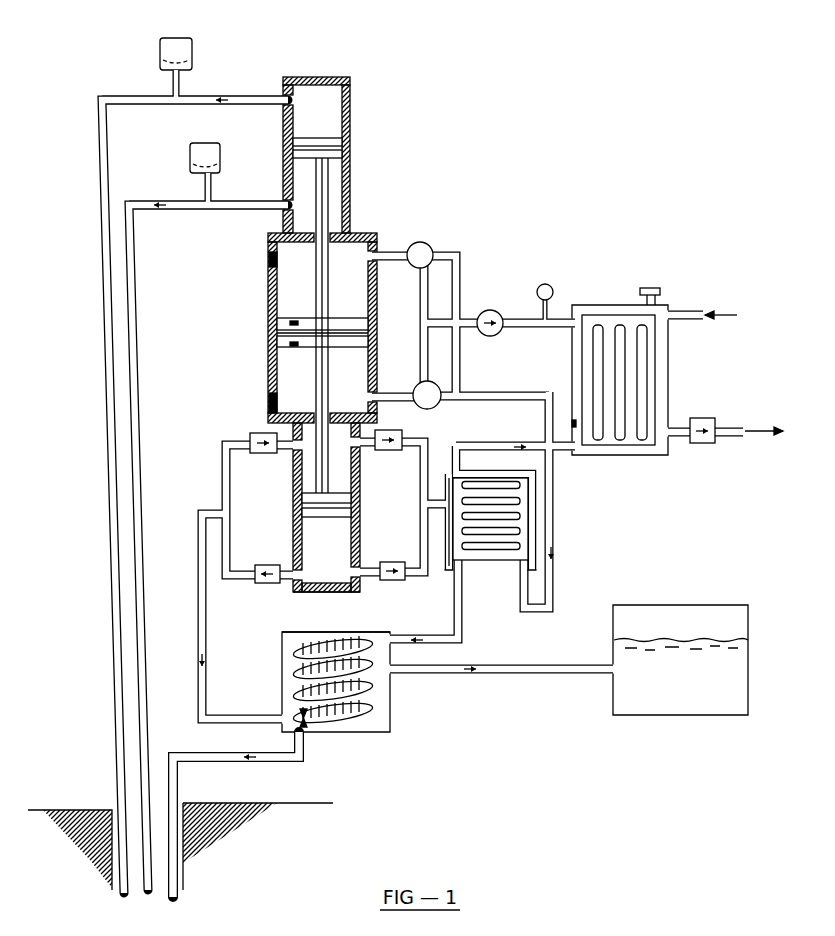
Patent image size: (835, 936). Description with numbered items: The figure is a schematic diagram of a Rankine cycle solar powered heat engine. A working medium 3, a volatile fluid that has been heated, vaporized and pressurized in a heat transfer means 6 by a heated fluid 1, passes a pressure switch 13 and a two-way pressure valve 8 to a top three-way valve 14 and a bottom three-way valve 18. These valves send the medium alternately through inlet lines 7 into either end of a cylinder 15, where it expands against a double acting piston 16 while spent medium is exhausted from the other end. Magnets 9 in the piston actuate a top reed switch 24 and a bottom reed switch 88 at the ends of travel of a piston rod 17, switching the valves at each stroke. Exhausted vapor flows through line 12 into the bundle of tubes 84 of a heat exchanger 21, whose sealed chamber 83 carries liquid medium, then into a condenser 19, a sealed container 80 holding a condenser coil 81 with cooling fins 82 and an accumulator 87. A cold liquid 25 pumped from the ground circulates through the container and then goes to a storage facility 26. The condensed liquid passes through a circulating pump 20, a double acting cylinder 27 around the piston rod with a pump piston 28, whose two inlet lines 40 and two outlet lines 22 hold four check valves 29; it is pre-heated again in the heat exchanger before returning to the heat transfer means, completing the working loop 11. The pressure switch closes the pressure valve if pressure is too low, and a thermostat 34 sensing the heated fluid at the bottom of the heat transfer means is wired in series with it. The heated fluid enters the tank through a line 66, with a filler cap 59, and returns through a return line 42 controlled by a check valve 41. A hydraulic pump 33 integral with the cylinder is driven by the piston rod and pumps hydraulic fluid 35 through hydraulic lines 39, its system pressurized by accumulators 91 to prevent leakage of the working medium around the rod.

The heated fluid 1 is at (787, 477).
The working medium 3 is at (199, 660).
The heat transfer means 6 is at (603, 315).
The inlet lines 7 is at (393, 257).
The two-way pressure valve 8 is at (493, 311).
The magnet 9 is at (295, 320).
The working loop 11 is at (541, 422).
The line 12 is at (488, 393).
The pressure switch 13 is at (546, 284).
The top three-way valve 14 is at (433, 243).
The cylinder 15 is at (268, 298).
The double acting piston 16 is at (277, 333).
The piston rod 17 is at (327, 277).
The bottom three-way valve 18 is at (422, 383).
The condenser 19 is at (282, 657).
The circulating pump 20 is at (358, 592).
The heat exchanger 21 is at (488, 572).
The outlet lines 22 is at (430, 447).
The top reed switch 24 is at (268, 258).
The cold liquid 25 is at (372, 723).
The storage facility 26 is at (698, 605).
The double acting cylinder 27 is at (297, 597).
The pump piston 28 is at (341, 514).
The check valves 29 is at (267, 565).
The hydraulic pump 33 is at (329, 76).
The thermostat 34 is at (573, 420).
The hydraulic fluid 35 is at (227, 96).
The hydraulic lines 39 is at (128, 327).
The inlet lines 40 is at (222, 473).
The check valve 41 is at (710, 418).
The return line 42 is at (678, 438).
The filler cap 59 is at (652, 288).
The line 66 is at (688, 308).
The sealed container 80 is at (390, 717).
The condenser coil 81 is at (373, 688).
The cooling fins 82 is at (353, 722).
The sealed chamber 83 is at (533, 484).
The bundle of tubes 84 is at (524, 503).
The accumulator 87 is at (303, 727).
The bottom reed switch 88 is at (270, 402).
The accumulators 91 is at (192, 47).